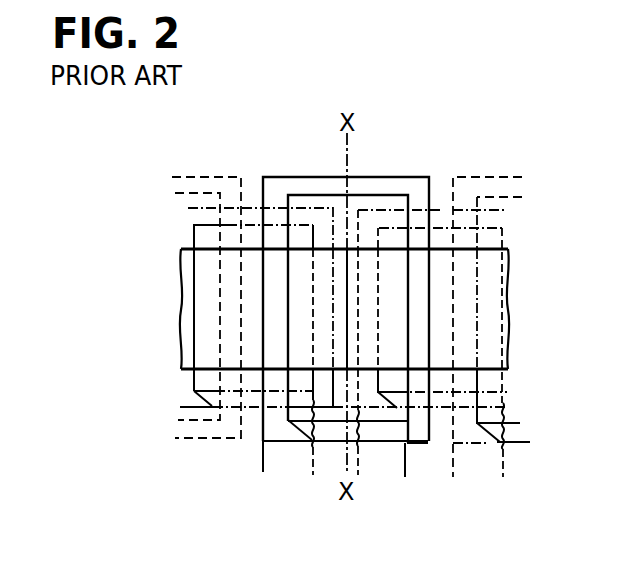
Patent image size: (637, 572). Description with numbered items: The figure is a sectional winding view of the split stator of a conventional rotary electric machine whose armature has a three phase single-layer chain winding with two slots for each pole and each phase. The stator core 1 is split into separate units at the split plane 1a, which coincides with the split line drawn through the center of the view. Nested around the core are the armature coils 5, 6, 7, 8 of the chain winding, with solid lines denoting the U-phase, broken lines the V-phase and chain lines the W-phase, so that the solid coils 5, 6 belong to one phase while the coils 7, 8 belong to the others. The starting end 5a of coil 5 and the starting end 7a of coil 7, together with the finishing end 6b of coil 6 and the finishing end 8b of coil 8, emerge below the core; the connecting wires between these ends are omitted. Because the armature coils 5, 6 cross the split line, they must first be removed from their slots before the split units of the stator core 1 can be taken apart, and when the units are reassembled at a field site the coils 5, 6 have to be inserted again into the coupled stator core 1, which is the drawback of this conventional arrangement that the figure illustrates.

The stator core 1 is at (507, 250).
The split plane 1a is at (348, 284).
The armature coil 5 is at (290, 176).
The starting end of coil 5a is at (262, 452).
The armature coil 6 is at (322, 194).
The finishing end of coil 6b is at (405, 460).
The armature coil 7 is at (250, 207).
The starting end of coil 7a is at (358, 462).
The armature coil 8 is at (202, 223).
The finishing end of coil 8b is at (308, 452).